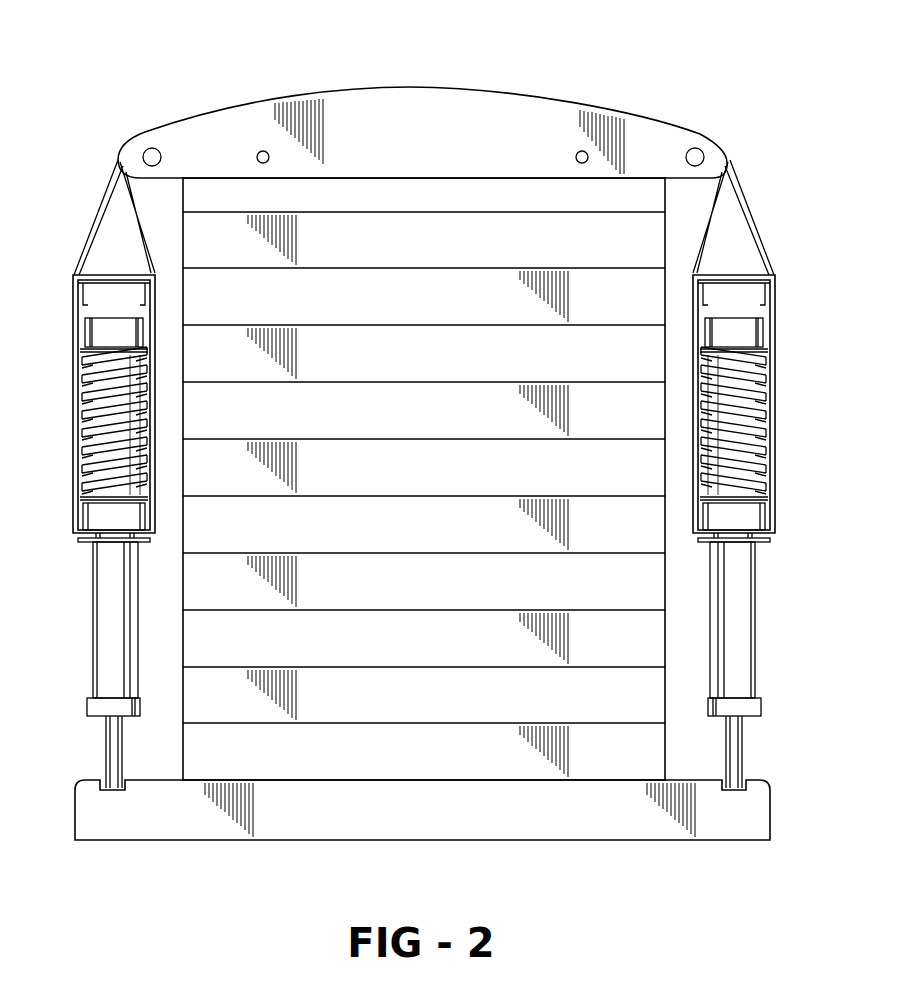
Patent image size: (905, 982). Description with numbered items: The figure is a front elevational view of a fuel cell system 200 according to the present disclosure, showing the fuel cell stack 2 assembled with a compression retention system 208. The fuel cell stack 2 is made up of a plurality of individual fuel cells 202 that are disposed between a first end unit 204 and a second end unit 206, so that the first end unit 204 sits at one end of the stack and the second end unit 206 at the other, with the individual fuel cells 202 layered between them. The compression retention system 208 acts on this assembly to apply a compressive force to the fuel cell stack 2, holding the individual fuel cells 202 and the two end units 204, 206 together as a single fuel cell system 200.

The fuel cell stack 2 is at (168, 239).
The fuel cell system 200 is at (682, 100).
The individual fuel cells 202 is at (190, 478).
The first end unit 204 is at (510, 118).
The second end unit 206 is at (523, 849).
The compression retention system 208 is at (786, 440).